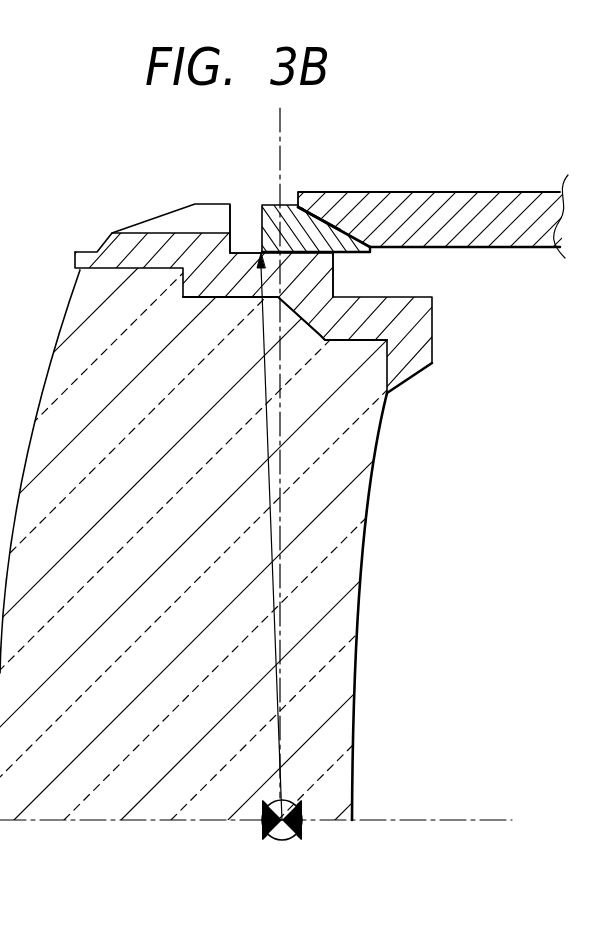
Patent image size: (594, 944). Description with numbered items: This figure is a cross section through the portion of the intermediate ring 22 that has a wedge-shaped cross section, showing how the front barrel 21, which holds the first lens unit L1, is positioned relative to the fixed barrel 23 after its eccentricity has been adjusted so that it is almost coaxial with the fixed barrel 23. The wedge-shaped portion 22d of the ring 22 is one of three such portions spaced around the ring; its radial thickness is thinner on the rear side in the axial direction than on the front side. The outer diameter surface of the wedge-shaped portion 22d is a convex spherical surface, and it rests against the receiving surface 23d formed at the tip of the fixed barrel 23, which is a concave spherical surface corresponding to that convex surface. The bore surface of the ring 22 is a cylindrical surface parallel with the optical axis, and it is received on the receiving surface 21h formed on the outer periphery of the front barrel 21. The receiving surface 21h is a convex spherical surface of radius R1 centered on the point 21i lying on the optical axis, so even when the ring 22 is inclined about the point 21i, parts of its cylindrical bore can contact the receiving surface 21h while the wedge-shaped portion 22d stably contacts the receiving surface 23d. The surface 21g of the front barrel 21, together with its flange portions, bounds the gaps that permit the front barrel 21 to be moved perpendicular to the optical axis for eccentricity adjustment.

The front barrel 21 is at (432, 332).
The surface 21g is at (334, 275).
The receiving surface 21h is at (245, 250).
The point 21i is at (283, 842).
The ring 22 is at (275, 203).
The wedge-shaped portion 22d is at (372, 249).
The fixed barrel 23 is at (487, 192).
The receiving surface 23d is at (341, 215).
The radius R1 is at (258, 536).
The first lens unit L1 is at (357, 632).